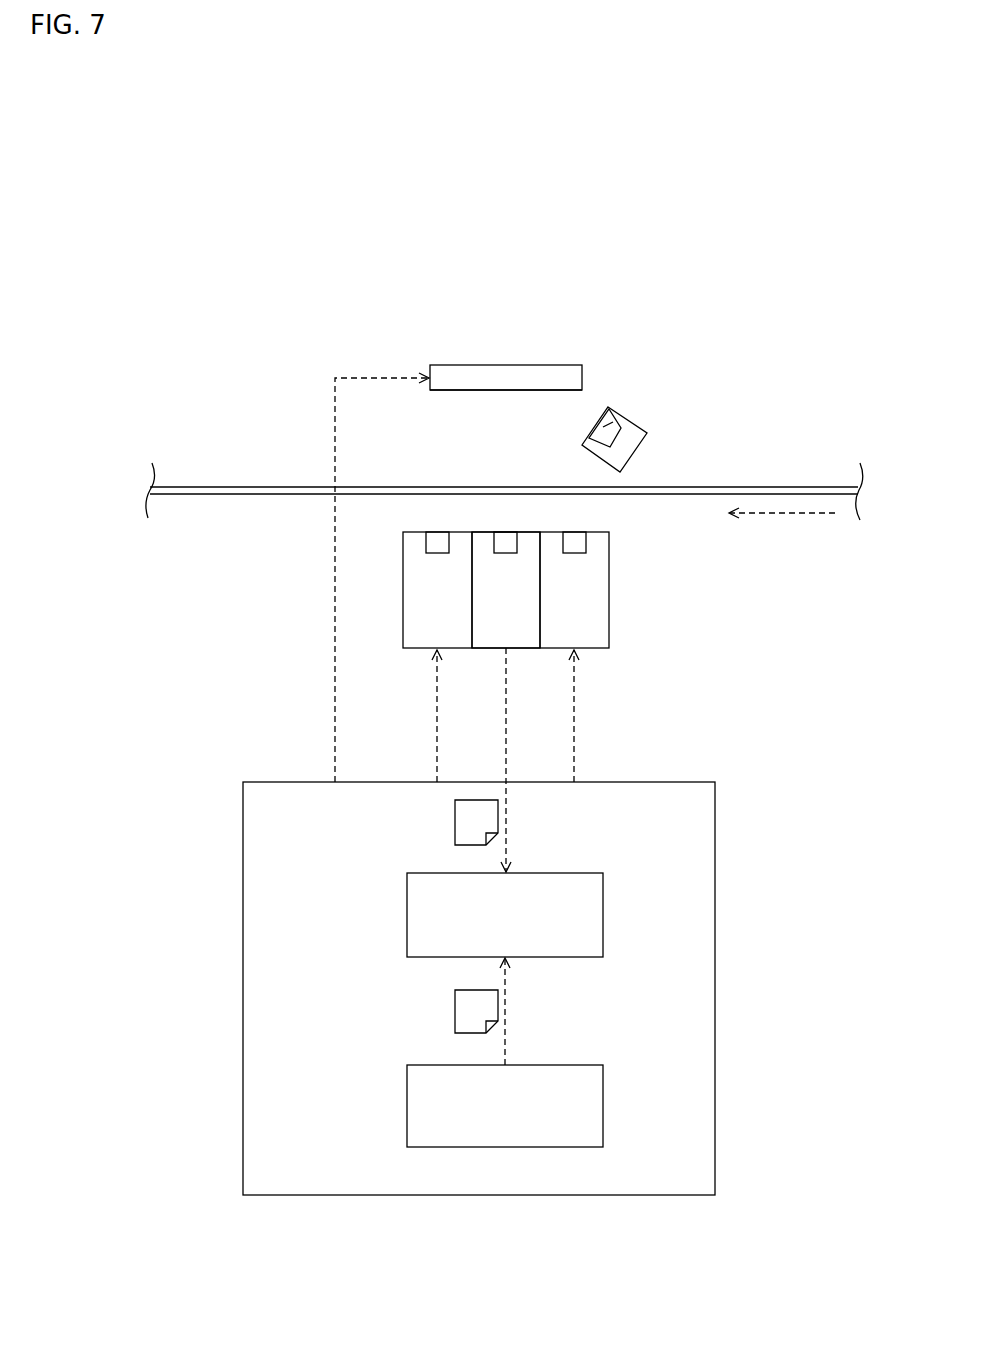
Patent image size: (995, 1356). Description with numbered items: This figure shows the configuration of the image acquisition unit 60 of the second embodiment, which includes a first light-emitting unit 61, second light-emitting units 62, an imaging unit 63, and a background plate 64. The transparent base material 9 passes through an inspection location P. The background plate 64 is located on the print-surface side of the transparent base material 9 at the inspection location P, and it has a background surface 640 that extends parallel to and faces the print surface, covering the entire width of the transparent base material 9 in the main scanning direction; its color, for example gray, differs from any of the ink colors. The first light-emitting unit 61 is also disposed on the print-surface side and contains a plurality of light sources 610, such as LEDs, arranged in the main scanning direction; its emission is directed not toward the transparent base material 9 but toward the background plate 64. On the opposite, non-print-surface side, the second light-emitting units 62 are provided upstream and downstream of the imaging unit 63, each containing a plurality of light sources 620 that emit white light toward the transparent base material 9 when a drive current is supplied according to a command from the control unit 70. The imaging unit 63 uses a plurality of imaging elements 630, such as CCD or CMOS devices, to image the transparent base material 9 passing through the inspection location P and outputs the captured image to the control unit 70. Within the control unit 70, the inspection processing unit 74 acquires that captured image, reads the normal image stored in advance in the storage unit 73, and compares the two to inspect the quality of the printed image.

The image acquisition unit 60 is at (465, 283).
The background plate 64 is at (505, 367).
The background surface 640 is at (503, 392).
The first light-emitting unit 61 is at (627, 442).
The light source 610 is at (612, 410).
The transparent base material 9 is at (800, 492).
The inspection location P is at (503, 483).
The second light-emitting unit 62 is at (425, 622).
The light source 620 is at (437, 542).
The imaging unit 63 is at (513, 622).
The imaging element 630 is at (506, 542).
The control unit 70 is at (583, 1195).
The storage unit 73 is at (407, 1105).
The inspection processing unit 74 is at (407, 915).